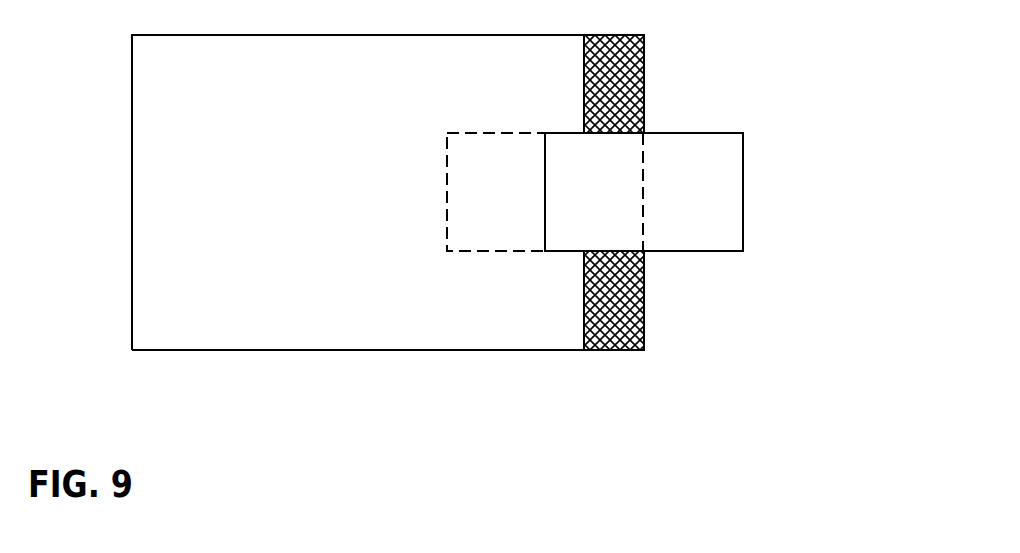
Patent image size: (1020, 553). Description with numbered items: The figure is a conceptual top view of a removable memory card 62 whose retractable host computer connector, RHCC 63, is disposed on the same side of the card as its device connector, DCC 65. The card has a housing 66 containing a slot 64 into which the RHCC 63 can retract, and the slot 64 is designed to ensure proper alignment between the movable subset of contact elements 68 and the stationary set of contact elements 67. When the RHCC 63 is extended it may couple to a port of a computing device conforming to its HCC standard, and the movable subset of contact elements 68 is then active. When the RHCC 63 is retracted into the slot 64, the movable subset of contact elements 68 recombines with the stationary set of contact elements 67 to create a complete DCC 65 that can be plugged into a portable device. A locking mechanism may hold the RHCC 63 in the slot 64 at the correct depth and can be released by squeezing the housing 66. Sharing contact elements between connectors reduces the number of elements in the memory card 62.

The removable memory card 62 is at (303, 220).
The retractable HCC (RHCC) 63 is at (678, 222).
The slot 64 is at (476, 222).
The DCC 65 is at (614, 300).
The housing 66 is at (462, 330).
The stationary set of contact elements 67 is at (644, 75).
The movable subset of contact elements 68 is at (743, 193).